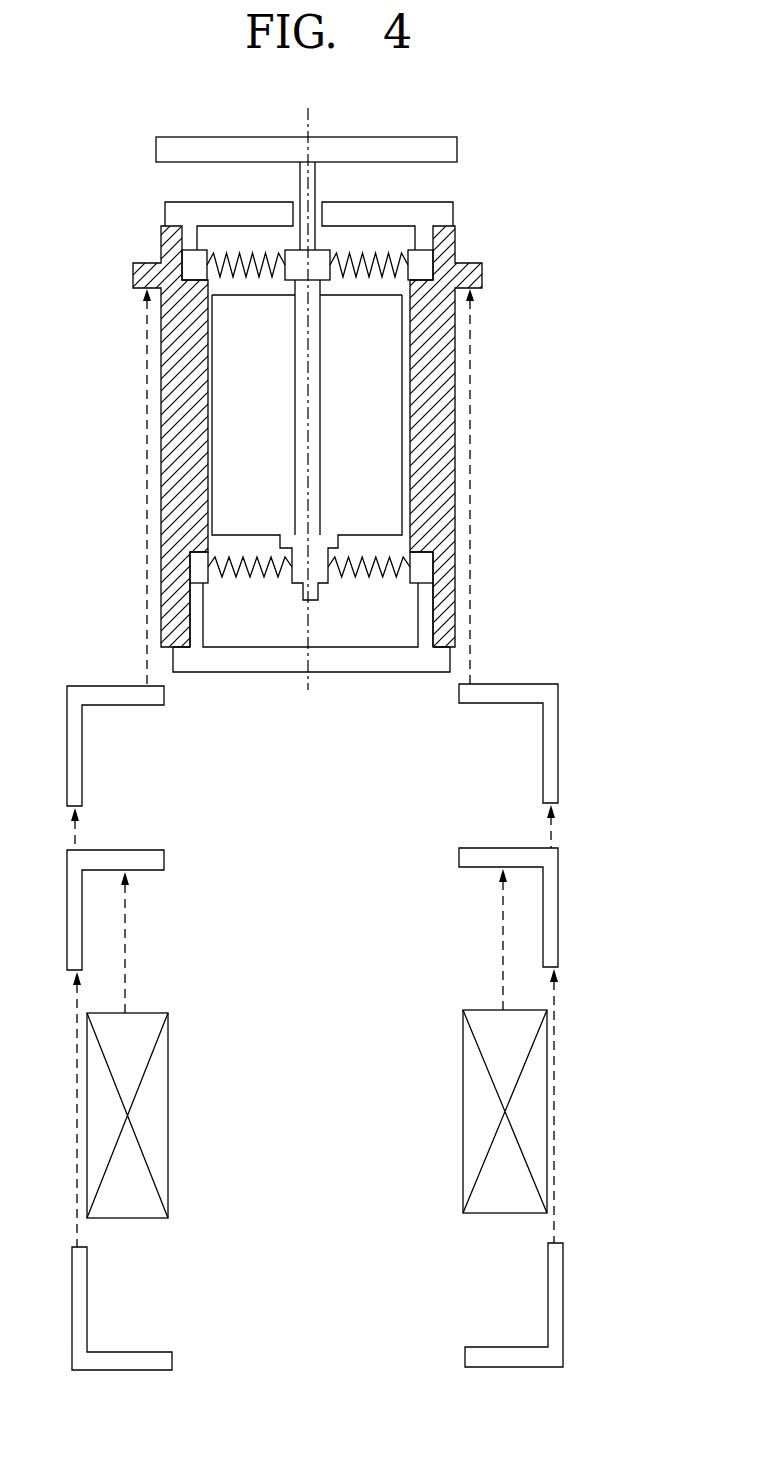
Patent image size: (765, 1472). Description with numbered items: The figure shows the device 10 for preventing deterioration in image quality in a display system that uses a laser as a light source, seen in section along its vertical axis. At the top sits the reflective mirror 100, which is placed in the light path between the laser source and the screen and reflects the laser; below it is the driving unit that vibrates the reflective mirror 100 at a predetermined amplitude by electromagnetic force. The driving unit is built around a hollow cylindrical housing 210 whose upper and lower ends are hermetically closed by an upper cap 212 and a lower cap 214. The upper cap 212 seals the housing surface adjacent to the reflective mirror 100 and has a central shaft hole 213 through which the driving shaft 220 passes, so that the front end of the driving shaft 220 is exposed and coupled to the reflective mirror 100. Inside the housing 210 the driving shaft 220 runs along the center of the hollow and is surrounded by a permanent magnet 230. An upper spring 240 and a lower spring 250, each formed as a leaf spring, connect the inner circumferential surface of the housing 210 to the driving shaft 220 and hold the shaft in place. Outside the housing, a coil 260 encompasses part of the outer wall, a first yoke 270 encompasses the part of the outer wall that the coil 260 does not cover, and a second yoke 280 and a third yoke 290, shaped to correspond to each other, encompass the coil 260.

The vibration generating apparatus 10 is at (133, 264).
The reflective mirror 100 is at (452, 149).
The housing 210 is at (447, 427).
The upper cap 212 is at (449, 207).
The shaft hole 213 is at (318, 206).
The lower cap 214 is at (430, 660).
The driving shaft 220 is at (315, 343).
The permanent magnet 230 is at (387, 383).
The upper spring 240 is at (428, 262).
The lower spring 250 is at (428, 567).
The coil 260 is at (538, 1111).
The first yoke 270 is at (553, 755).
The second yoke 280 is at (552, 928).
The third yoke 290 is at (556, 1313).